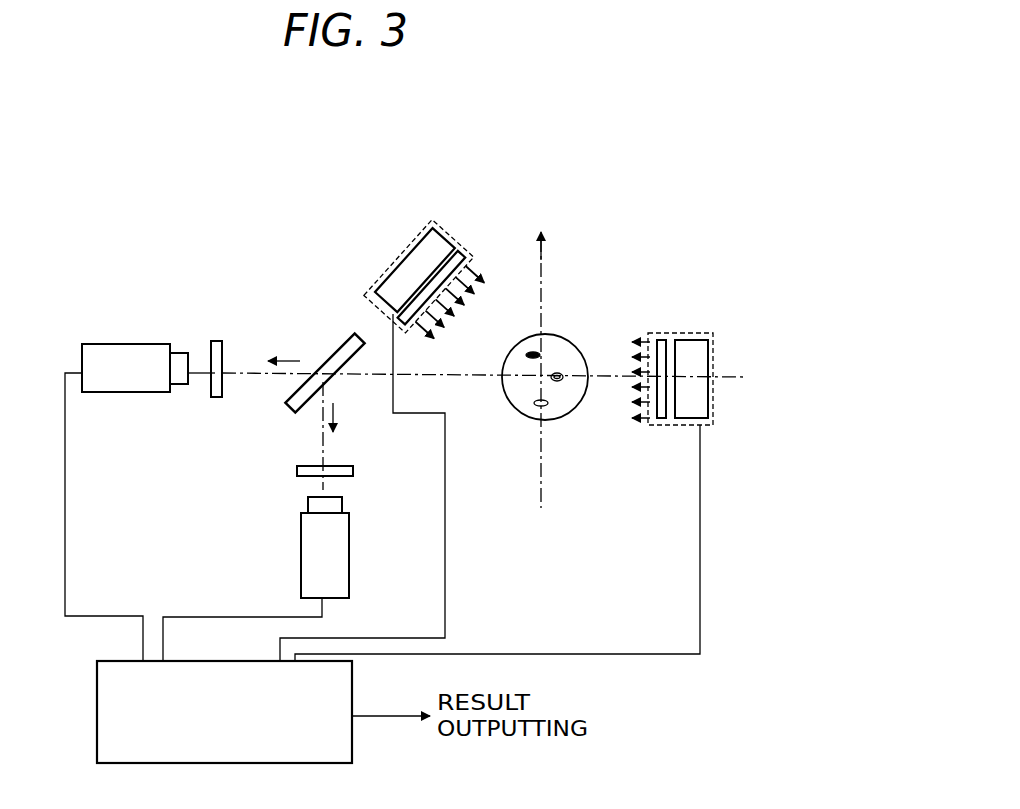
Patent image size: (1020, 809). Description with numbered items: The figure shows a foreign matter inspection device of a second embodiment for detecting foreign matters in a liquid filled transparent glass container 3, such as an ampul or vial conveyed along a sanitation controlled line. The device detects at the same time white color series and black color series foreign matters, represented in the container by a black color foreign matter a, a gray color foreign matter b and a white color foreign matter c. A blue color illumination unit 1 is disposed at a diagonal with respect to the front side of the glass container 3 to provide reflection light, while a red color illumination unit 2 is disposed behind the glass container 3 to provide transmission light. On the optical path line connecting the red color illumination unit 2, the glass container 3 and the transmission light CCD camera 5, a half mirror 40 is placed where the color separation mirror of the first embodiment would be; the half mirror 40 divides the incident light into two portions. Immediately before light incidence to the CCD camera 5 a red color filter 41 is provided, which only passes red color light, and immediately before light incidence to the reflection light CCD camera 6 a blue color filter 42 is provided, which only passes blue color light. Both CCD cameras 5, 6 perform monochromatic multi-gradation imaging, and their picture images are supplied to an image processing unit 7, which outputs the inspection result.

The blue color illumination unit 1 is at (432, 228).
The red color illumination unit 2 is at (713, 333).
The glass container 3 is at (573, 411).
The CCD camera 5 is at (105, 345).
The CCD camera 6 is at (300, 517).
The image processing unit 7 is at (100, 720).
The half mirror 40 is at (283, 407).
The red color filter 41 is at (216, 343).
The blue color filter 42 is at (296, 468).
The black color foreign matter a is at (533, 350).
The gray color foreign matter b is at (560, 373).
The white color foreign matter c is at (543, 410).